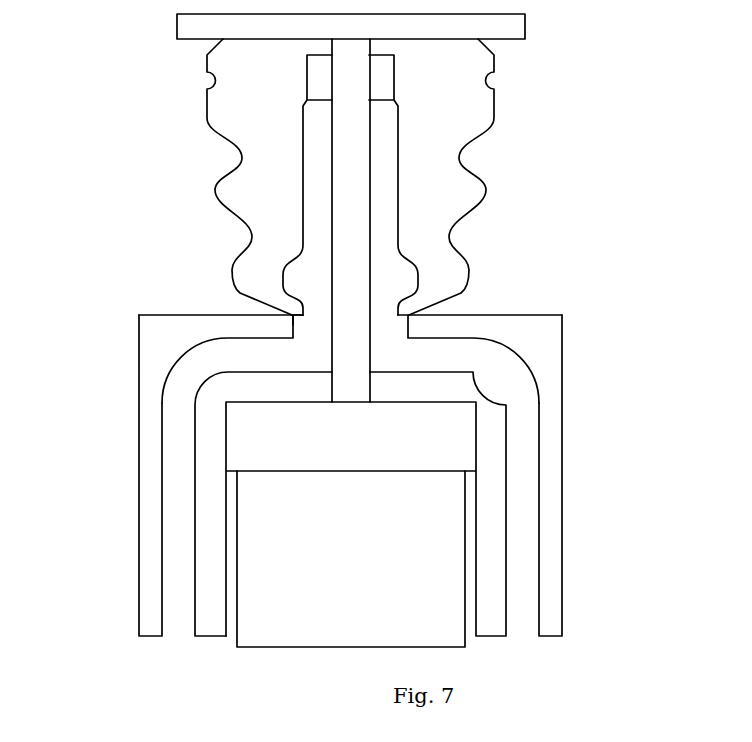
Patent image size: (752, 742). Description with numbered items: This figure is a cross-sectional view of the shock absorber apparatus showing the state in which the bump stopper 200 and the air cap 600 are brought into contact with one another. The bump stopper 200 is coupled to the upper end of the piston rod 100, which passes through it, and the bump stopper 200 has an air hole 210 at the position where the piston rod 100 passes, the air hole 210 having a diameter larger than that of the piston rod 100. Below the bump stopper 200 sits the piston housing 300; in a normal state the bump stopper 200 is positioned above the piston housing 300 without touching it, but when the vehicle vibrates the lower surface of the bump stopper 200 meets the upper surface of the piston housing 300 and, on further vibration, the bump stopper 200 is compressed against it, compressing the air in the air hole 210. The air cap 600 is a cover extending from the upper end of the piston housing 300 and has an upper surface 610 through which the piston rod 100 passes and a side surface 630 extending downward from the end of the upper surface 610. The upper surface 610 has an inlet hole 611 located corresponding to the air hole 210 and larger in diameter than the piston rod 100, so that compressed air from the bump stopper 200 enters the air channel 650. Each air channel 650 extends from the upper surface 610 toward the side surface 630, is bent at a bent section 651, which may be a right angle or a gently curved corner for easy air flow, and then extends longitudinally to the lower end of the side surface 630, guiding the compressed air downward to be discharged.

The piston rod 100 is at (358, 228).
The bump stopper 200 is at (482, 105).
The air hole 210 is at (387, 158).
The piston housing 300 is at (445, 588).
The air cap 600 is at (368, 446).
The upper surface 610 is at (155, 315).
The inlet hole 611 is at (306, 321).
The side surface 630 is at (563, 510).
The air channel 650 is at (525, 477).
The bent section 651 is at (188, 370).